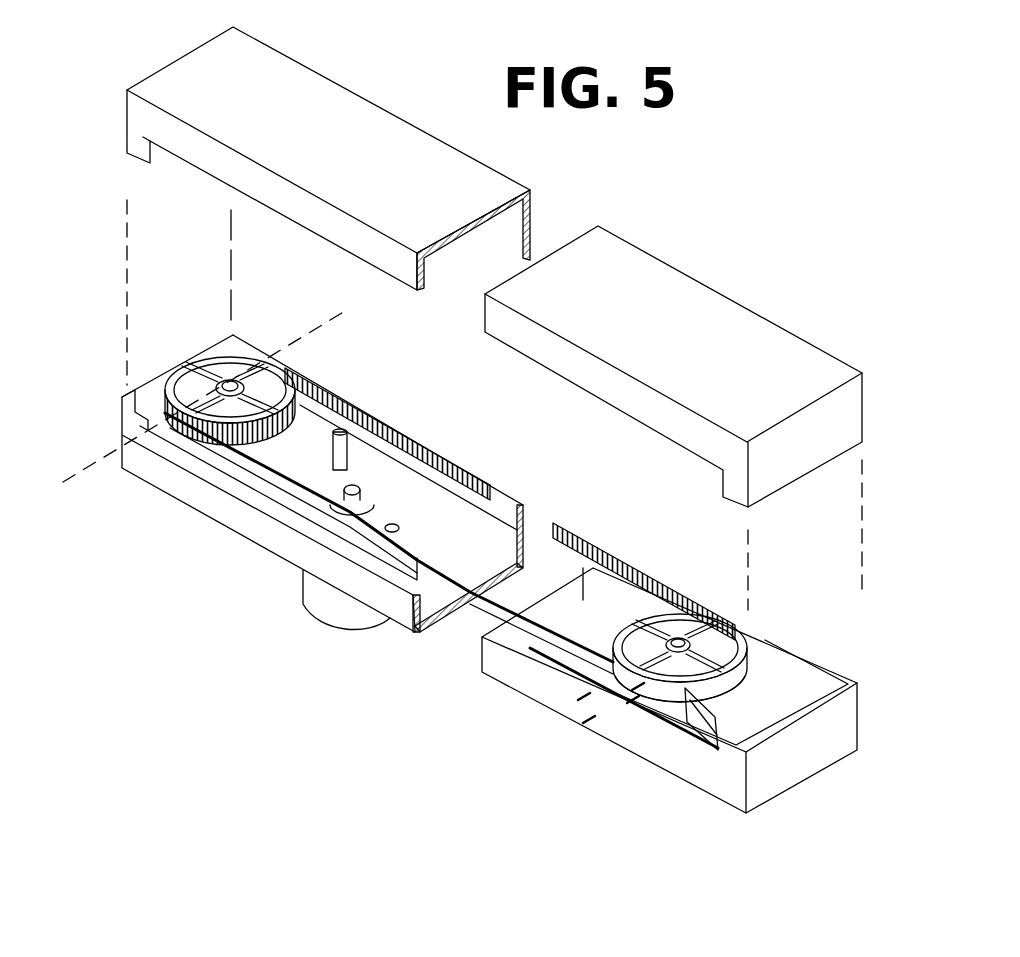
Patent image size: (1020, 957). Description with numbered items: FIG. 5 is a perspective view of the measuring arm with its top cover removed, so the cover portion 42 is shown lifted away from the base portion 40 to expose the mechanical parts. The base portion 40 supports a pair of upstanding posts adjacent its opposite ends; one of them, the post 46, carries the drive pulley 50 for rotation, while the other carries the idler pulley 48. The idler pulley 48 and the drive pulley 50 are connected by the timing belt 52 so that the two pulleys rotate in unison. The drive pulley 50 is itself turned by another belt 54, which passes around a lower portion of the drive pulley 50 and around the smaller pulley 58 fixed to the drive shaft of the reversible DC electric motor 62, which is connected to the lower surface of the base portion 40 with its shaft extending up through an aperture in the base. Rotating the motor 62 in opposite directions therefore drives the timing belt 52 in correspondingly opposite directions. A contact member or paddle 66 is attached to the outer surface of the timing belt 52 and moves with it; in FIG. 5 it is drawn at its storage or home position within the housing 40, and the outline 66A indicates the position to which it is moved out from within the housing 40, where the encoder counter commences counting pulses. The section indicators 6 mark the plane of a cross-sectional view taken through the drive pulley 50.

The base portion 40 is at (778, 800).
The cover portion 42 is at (697, 283).
The post 46 is at (297, 383).
The idler pulley 48 is at (717, 638).
The drive pulley 50 is at (228, 374).
The timing belt 52 is at (468, 475).
The belt 54 is at (345, 465).
The smaller pulley 58 is at (383, 492).
The reversible DC electric motor 62 is at (350, 617).
The contact member 66 is at (713, 733).
The extended position of contact member 66A is at (585, 712).
The section line 6- 6 is at (55, 451).